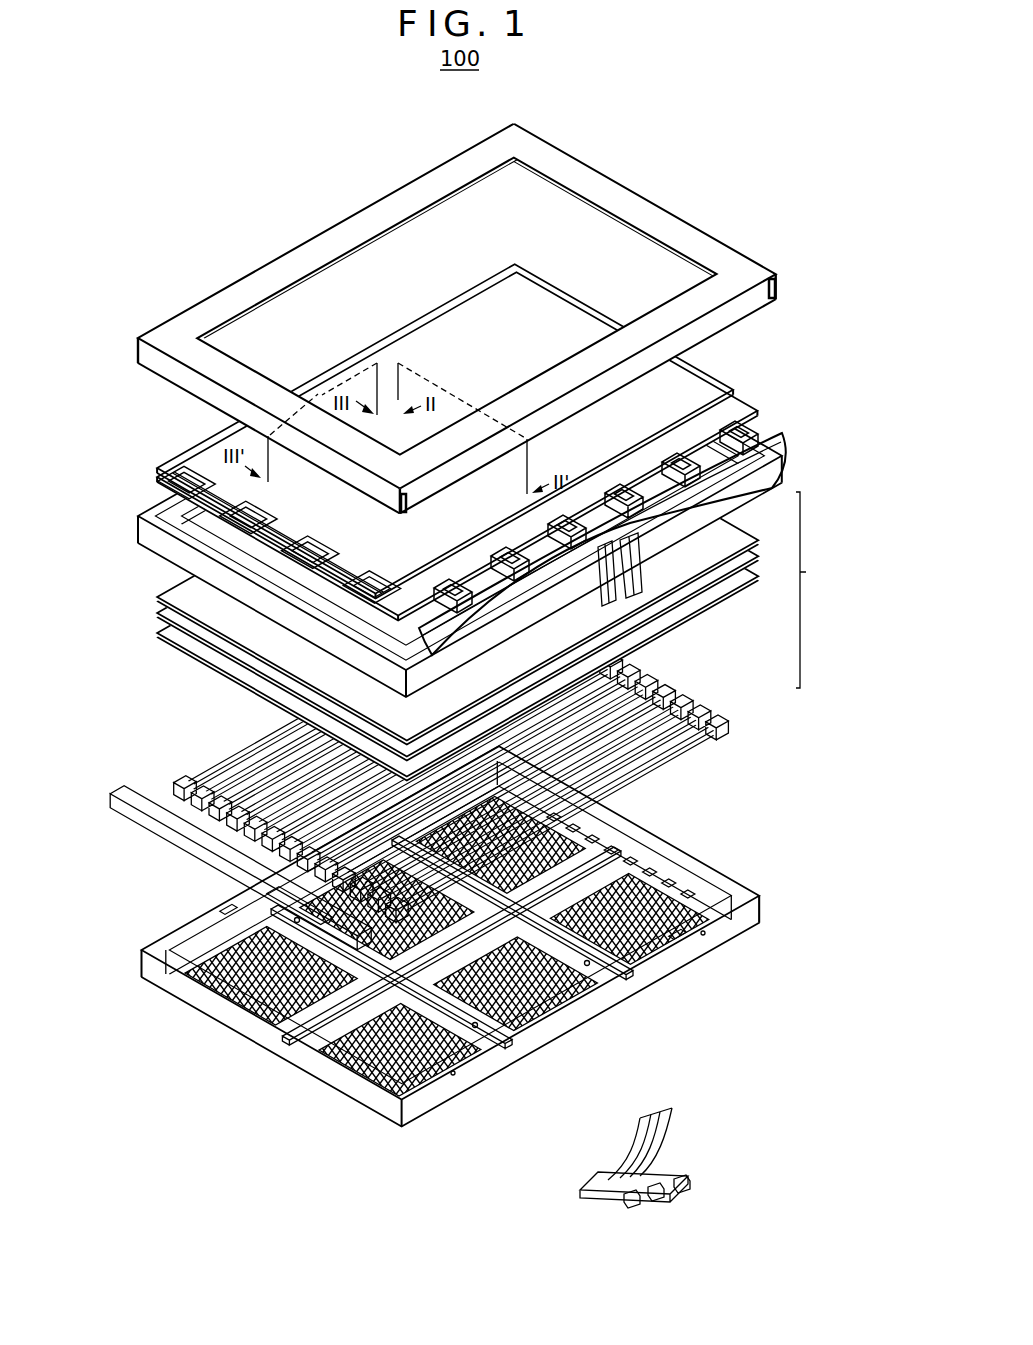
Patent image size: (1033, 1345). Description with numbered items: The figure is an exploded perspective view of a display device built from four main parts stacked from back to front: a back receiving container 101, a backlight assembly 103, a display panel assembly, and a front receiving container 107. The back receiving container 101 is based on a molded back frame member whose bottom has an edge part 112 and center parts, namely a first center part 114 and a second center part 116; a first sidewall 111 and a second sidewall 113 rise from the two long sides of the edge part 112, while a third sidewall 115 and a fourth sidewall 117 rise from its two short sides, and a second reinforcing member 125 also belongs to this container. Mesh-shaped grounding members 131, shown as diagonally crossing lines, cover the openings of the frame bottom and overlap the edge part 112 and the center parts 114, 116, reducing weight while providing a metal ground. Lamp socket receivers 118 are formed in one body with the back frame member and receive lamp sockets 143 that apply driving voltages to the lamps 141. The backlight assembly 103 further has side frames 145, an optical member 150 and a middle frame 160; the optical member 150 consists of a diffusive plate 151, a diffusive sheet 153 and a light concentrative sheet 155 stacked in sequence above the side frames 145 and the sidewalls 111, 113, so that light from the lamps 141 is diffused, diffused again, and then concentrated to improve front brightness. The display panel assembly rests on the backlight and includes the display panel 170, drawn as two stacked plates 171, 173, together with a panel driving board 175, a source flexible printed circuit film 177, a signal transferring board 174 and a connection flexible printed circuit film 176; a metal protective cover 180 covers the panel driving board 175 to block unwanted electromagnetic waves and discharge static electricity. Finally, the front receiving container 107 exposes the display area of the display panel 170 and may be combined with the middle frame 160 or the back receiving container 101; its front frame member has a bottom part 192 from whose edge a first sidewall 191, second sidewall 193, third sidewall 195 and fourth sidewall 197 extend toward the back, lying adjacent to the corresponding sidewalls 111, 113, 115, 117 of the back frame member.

The back receiving container 101 is at (447, 936).
The backlight assembly 103 is at (822, 590).
The front receiving container 107 is at (462, 313).
The first sidewall 111 is at (597, 1040).
The edge part 112 is at (195, 950).
The second sidewall 113 is at (205, 905).
The first center part 114 is at (648, 970).
The third sidewall 115 is at (262, 1043).
The second center part 116 is at (690, 942).
The fourth sidewall 117 is at (688, 842).
The lamp socket receivers 118 is at (645, 825).
The second reinforcing member 125 is at (275, 905).
The grounding members 131 is at (543, 1055).
The lamps 141 is at (424, 757).
The lamp sockets 143 is at (222, 745).
The side frames 145 is at (130, 812).
The optical member 150 is at (398, 589).
The diffusive plate 151 is at (157, 636).
The diffusive sheet 153 is at (157, 615).
The light concentrative sheet 155 is at (157, 599).
The middle frame 160 is at (140, 533).
The display panel 170 is at (506, 442).
The first substrate 171 is at (742, 405).
The second substrate 173 is at (736, 381).
The signal transferring board 174 is at (782, 461).
The panel driving board 175 is at (572, 1192).
The connection flexible printed circuit film 176 is at (772, 491).
The source flexible printed circuit film 177 is at (758, 424).
The protective cover 180 is at (603, 1205).
The first sidewall 191 is at (748, 317).
The bottom part 192 is at (634, 200).
The second sidewall 193 is at (306, 239).
The third sidewall 195 is at (180, 386).
The fourth sidewall 197 is at (584, 156).